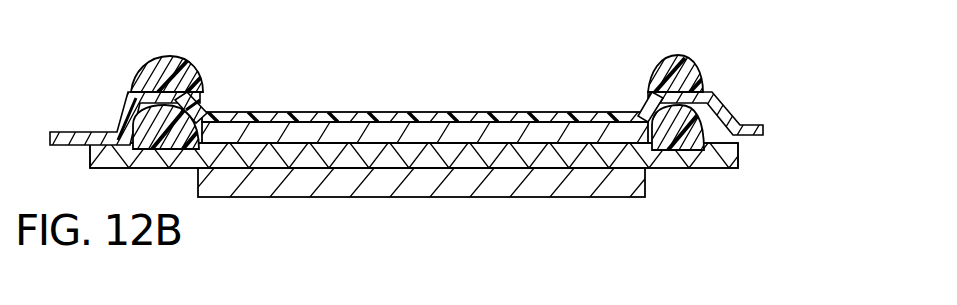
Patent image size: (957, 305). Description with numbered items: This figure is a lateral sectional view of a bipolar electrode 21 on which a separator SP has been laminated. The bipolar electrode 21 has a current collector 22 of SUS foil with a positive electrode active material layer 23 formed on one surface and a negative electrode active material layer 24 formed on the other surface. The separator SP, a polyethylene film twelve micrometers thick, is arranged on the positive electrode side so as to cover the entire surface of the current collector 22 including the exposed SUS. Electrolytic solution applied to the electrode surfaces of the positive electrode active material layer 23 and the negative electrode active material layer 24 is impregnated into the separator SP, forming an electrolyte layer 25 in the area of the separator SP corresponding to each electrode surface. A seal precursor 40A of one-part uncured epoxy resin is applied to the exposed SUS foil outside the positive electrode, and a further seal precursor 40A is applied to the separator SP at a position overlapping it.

The bipolar electrode 21 is at (746, 157).
The current collector 22 is at (328, 150).
The positive electrode active material layer 23 is at (389, 133).
The negative electrode active material layer 24 is at (458, 180).
The electrolyte layer 25 is at (272, 115).
The seal precursor 40A is at (192, 137).
The separator SP is at (122, 112).